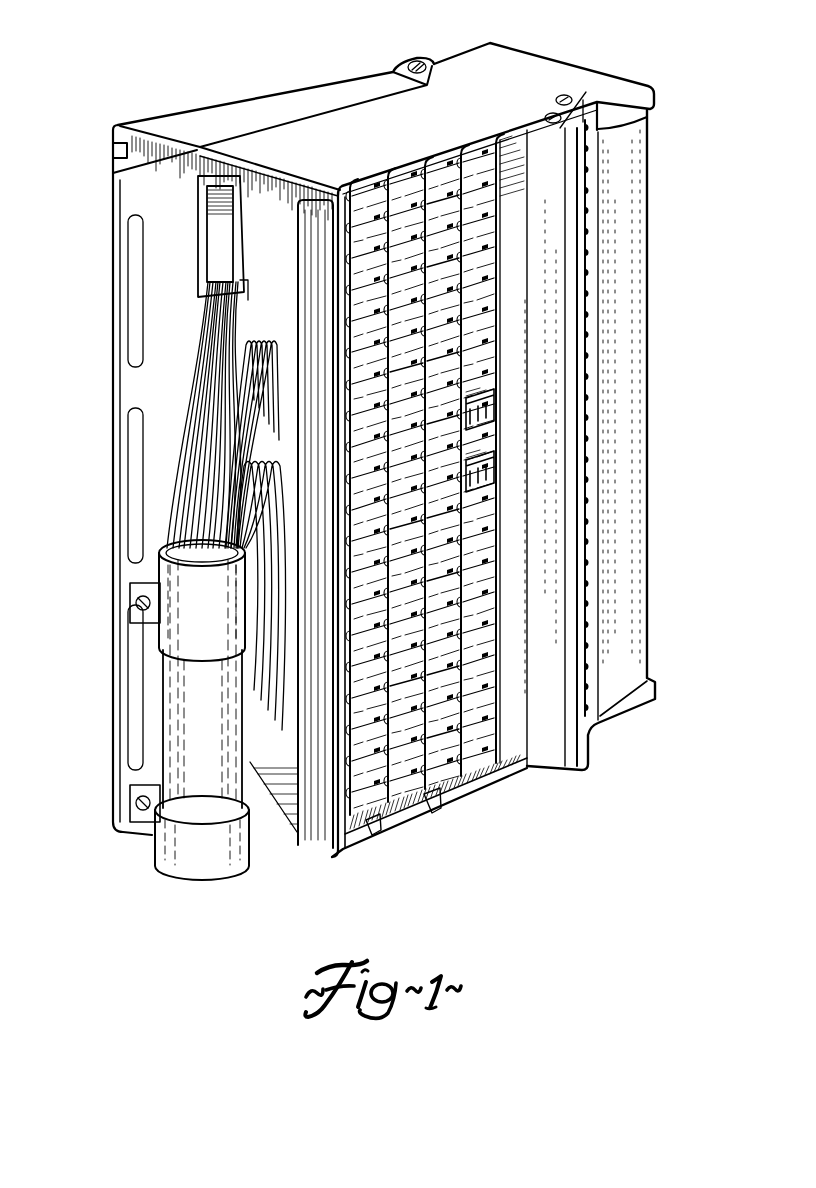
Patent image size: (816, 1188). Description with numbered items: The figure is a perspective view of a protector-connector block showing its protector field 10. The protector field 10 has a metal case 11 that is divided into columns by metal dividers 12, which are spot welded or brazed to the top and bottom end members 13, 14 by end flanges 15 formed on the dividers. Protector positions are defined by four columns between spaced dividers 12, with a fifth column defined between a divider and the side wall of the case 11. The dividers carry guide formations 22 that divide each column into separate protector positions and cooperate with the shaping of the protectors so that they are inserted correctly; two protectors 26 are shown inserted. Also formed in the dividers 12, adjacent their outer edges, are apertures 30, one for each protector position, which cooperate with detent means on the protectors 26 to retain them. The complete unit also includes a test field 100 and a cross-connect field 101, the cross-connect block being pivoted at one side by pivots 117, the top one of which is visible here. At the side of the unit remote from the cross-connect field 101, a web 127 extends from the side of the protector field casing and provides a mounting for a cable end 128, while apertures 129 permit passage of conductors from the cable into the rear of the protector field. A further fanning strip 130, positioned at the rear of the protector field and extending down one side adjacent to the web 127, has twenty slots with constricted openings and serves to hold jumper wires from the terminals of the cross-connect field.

The protector field 10 is at (473, 812).
The metal case 11 is at (620, 212).
The metal dividers 12 is at (437, 811).
The top end member 13 is at (387, 128).
The bottom end member 14 is at (370, 833).
The end flanges 15 is at (478, 145).
The guide formations 22 is at (497, 303).
The protectors 26 is at (494, 475).
The apertures 30 is at (490, 597).
The test field 100 is at (625, 124).
The cross-connect field 101 is at (598, 95).
The pivots 117 is at (415, 61).
The web 127 is at (135, 380).
The cable end 128 is at (178, 578).
The apertures 129 is at (225, 215).
The fanning strip 130 is at (133, 128).